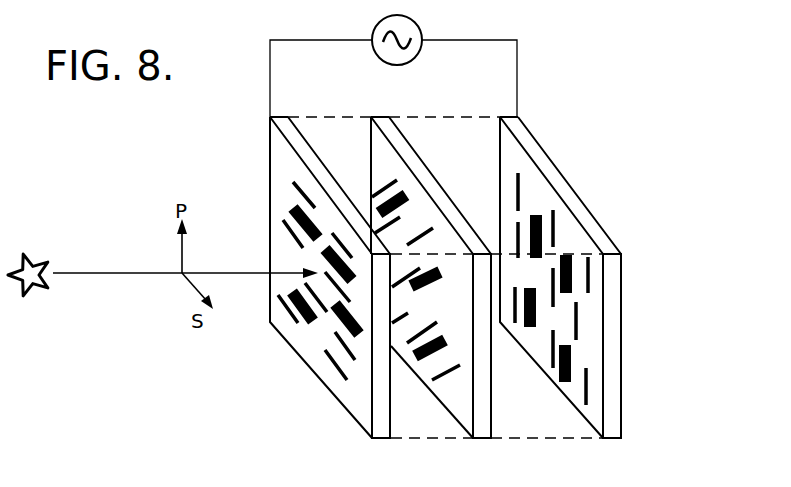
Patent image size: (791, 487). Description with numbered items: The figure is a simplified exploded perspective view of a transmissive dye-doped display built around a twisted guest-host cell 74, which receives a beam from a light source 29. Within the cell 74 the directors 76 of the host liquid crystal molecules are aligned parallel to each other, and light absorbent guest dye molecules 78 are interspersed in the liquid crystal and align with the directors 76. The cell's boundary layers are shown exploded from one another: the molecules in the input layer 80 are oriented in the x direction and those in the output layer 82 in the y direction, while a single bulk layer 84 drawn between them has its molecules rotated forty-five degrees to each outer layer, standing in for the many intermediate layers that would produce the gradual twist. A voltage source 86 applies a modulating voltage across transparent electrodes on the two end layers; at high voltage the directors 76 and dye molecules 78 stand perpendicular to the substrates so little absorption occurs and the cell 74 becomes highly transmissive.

The light source 29 is at (32, 259).
The twisted guest-host cell 74 is at (584, 120).
The directors of the host LC molecules 76 is at (337, 337).
The guest dye molecules 78 is at (340, 325).
The input layer 80 is at (339, 402).
The output layer 82 is at (622, 389).
The bulk layer 84 is at (380, 116).
The voltage source 86 is at (410, 19).